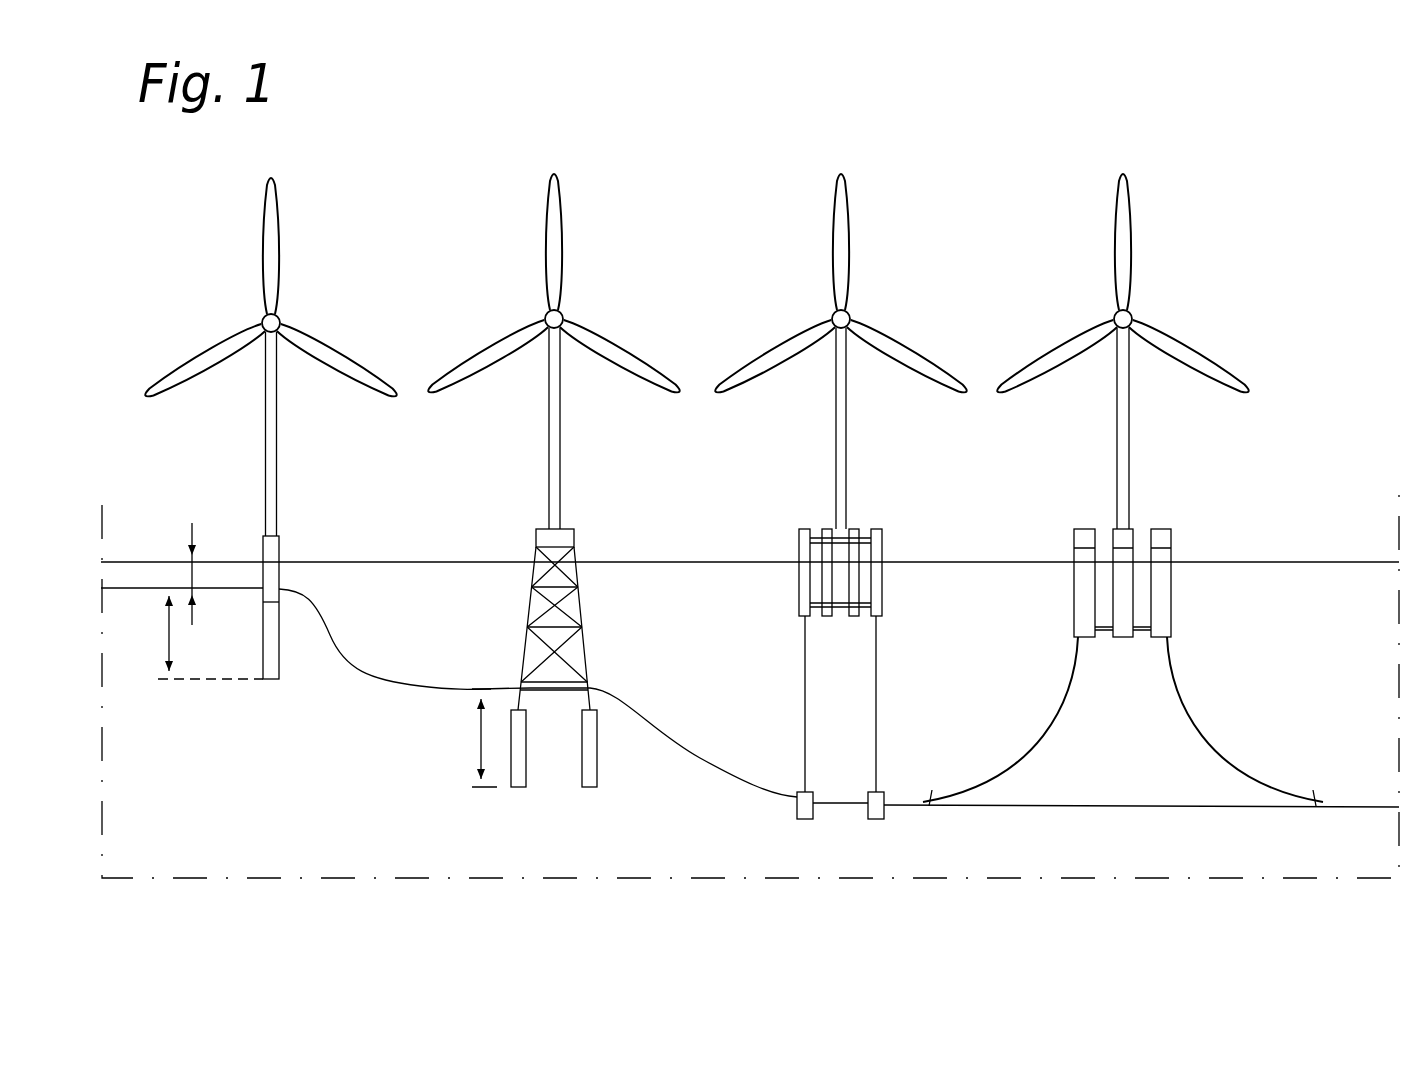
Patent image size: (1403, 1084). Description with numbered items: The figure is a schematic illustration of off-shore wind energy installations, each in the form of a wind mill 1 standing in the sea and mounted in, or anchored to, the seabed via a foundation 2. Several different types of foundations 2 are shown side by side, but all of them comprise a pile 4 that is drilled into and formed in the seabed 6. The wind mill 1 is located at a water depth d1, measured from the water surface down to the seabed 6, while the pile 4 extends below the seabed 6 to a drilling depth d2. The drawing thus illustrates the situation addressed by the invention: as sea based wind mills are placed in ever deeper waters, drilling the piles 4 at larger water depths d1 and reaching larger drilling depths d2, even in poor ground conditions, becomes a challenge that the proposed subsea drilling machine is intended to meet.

The wind mill 1 is at (170, 269).
The foundation 2 is at (797, 686).
The pile 4 is at (280, 645).
The seabed 6 is at (200, 847).
The water depth d1 is at (192, 530).
The drilling depth d2 is at (169, 636).